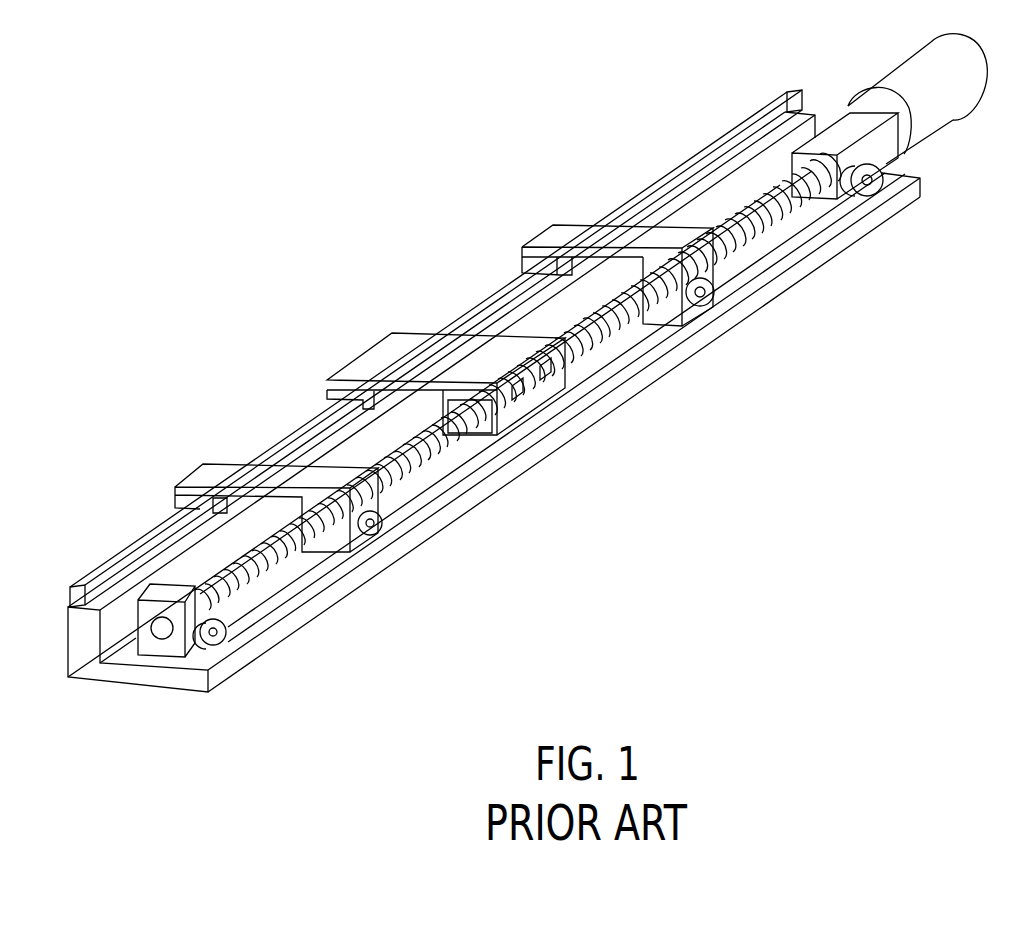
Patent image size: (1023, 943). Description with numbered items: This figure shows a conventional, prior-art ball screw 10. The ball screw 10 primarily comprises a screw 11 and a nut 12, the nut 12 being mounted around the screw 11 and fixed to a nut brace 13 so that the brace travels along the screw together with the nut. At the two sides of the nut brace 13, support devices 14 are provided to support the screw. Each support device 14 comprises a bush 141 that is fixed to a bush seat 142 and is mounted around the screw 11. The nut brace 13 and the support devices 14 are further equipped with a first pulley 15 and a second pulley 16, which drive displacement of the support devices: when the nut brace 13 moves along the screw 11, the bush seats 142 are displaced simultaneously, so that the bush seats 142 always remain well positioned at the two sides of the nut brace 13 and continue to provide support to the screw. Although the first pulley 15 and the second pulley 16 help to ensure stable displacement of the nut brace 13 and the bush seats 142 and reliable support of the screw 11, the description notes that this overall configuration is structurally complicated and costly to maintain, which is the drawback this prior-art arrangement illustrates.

The ball screw 10 is at (527, 363).
The screw 11 is at (593, 327).
The nut 12 is at (477, 405).
The nut brace 13 is at (380, 355).
The support device 14 is at (220, 470).
The bush 141 is at (657, 267).
The bush seat 142 is at (680, 238).
The first pulley 15 is at (695, 306).
The second pulley 16 is at (862, 197).